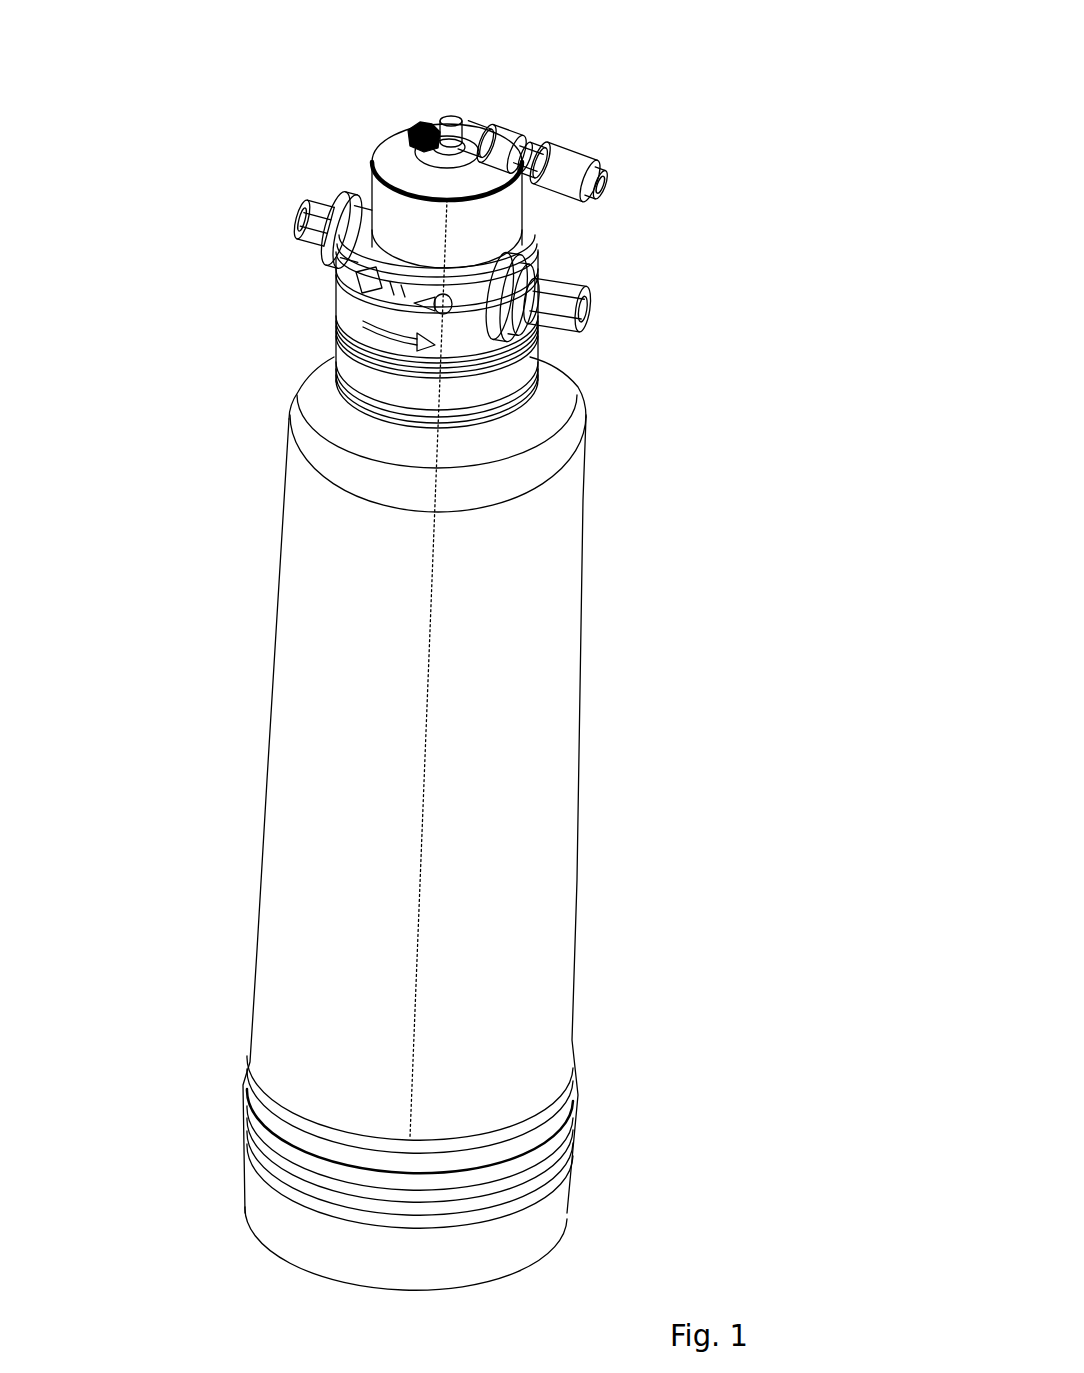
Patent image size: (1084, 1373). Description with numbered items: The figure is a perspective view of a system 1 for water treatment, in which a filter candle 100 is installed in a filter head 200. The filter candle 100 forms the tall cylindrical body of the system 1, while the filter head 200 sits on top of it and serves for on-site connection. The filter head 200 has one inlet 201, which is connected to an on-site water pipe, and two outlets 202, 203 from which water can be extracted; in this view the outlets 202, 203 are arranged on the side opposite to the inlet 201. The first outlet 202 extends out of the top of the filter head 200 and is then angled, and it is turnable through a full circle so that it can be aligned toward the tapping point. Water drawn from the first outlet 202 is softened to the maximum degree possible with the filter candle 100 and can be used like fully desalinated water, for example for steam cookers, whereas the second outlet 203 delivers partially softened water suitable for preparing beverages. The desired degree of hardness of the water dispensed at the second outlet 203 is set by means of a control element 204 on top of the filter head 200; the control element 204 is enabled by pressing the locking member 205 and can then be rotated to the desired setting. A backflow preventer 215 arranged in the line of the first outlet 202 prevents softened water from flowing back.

The system for water treatment 1 is at (222, 814).
The filter candle 100 is at (533, 873).
The filter head 200 is at (373, 364).
The inlet 201 is at (308, 221).
The first outlet 202 is at (597, 173).
The second outlet 203 is at (553, 312).
The control element 204 is at (398, 165).
The locking member 205 is at (423, 125).
The backflow preventer 215 is at (536, 165).